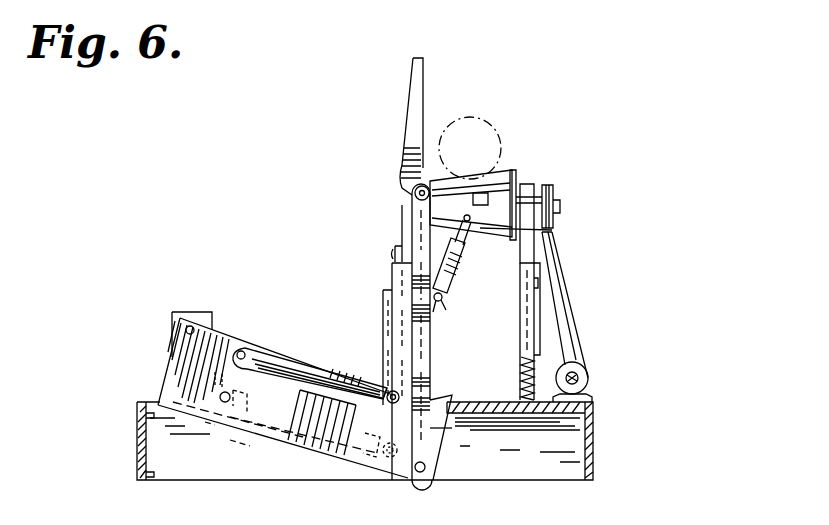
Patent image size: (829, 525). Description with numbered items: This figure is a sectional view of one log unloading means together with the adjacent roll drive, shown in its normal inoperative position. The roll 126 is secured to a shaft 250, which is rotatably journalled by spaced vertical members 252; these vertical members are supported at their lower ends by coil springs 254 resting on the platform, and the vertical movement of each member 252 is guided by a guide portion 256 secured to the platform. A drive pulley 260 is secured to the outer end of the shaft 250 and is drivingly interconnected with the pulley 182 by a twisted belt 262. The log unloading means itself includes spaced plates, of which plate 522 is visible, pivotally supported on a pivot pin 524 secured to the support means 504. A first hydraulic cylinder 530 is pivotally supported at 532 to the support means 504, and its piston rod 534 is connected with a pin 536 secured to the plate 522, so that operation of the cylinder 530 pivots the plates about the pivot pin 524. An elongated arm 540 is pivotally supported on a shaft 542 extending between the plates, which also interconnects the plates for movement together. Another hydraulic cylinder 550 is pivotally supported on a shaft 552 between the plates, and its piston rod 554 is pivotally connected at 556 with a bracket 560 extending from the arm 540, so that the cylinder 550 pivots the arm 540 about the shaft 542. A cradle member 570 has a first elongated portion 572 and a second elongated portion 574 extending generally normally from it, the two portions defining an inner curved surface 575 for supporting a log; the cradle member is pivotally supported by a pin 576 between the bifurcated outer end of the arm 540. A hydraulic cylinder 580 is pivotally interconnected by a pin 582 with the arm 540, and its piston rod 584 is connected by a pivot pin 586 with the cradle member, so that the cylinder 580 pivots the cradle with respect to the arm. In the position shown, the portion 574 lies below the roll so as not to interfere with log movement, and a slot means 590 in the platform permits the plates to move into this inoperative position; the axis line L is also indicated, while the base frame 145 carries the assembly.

The roll 126 is at (527, 157).
The base frame 145 is at (507, 430).
The pulley 182 is at (589, 380).
The shaft 250 is at (560, 207).
The vertical member 252 is at (528, 186).
The coil spring 254 is at (518, 372).
The guide portion 256 is at (523, 326).
The drive pulley 260 is at (555, 192).
The twisted belt 262 is at (570, 313).
The support means 504 is at (203, 315).
The plate 522 is at (168, 396).
The pivot pin 524 is at (195, 331).
The first hydraulic cylinder 530 is at (283, 398).
The pivotal support 532 is at (227, 443).
The piston rod 534 is at (374, 472).
The pin 536 is at (393, 482).
The elongated arm 540 is at (424, 351).
The shaft 542 is at (431, 480).
The hydraulic cylinder 550 is at (295, 368).
The shaft 552 is at (244, 352).
The piston rod 554 is at (404, 396).
The pivotal connection 556 is at (391, 391).
The bracket 560 is at (415, 386).
The cradle member 570 is at (369, 126).
The first elongated portion 572 is at (410, 117).
The second elongated portion 574 is at (473, 193).
The inner curved surface 575 is at (433, 195).
The pin 576 is at (416, 195).
The hydraulic cylinder 580 is at (450, 276).
The pin 582 is at (441, 301).
The piston rod 584 is at (466, 238).
The pivot pin 586 is at (549, 231).
The slot means 590 is at (437, 442).
The axis line L is at (497, 131).